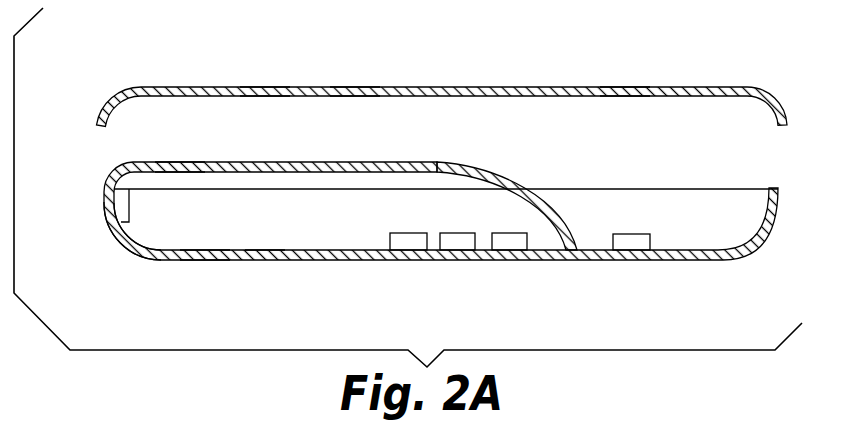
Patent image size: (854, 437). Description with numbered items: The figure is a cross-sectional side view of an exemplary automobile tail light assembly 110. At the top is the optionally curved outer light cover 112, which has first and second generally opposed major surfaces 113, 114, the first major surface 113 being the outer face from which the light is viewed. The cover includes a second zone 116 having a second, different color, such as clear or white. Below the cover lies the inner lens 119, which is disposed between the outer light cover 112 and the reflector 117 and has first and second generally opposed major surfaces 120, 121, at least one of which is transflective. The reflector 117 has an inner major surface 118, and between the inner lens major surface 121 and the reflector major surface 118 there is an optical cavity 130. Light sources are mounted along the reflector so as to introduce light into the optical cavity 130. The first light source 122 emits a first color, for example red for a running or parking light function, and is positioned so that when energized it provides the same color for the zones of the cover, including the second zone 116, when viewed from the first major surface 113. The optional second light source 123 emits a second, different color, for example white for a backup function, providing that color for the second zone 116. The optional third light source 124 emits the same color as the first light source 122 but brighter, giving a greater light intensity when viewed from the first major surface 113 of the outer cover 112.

The automobile tail light assembly 110 is at (690, 48).
The outer light cover 112 is at (494, 82).
The first major surface 113 is at (348, 88).
The second major surface 114 is at (262, 97).
The second zone 116 is at (620, 92).
The first major surface 120 is at (303, 162).
The second major surface 121 is at (180, 178).
The inner lens 119 is at (438, 165).
The reflector 117 is at (203, 262).
The inner major surface 118 is at (255, 248).
The optical cavity 130 is at (160, 238).
The first light source 122 is at (121, 206).
The third light source 124 is at (415, 243).
The second light source 123 is at (632, 244).